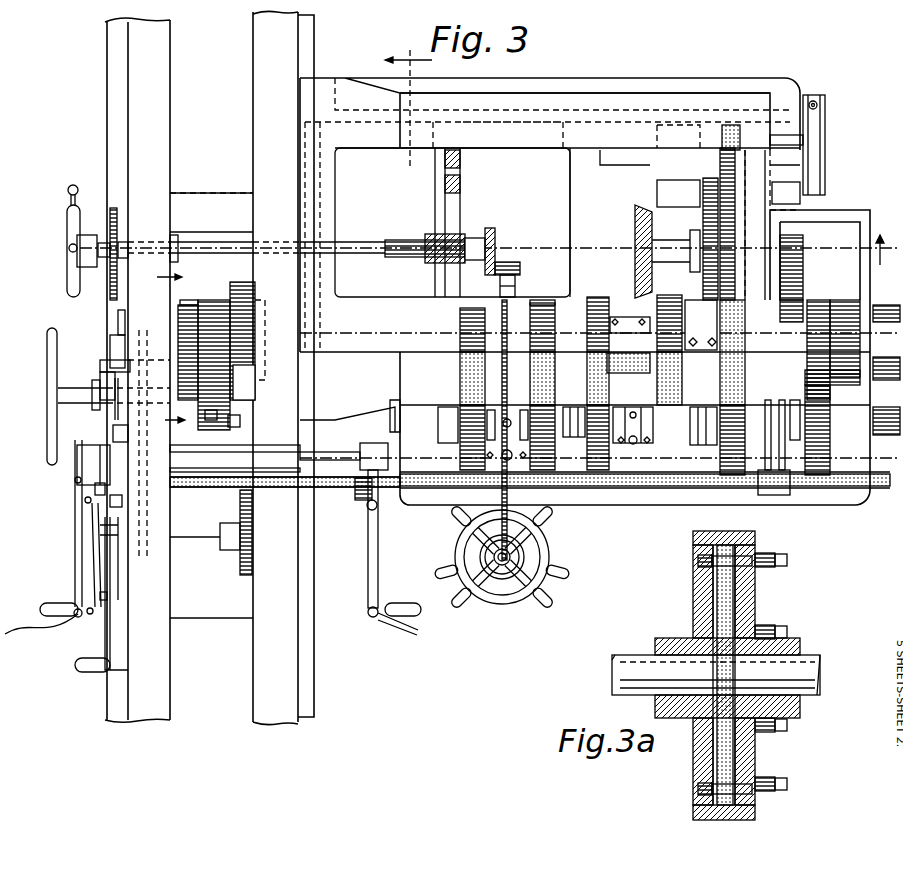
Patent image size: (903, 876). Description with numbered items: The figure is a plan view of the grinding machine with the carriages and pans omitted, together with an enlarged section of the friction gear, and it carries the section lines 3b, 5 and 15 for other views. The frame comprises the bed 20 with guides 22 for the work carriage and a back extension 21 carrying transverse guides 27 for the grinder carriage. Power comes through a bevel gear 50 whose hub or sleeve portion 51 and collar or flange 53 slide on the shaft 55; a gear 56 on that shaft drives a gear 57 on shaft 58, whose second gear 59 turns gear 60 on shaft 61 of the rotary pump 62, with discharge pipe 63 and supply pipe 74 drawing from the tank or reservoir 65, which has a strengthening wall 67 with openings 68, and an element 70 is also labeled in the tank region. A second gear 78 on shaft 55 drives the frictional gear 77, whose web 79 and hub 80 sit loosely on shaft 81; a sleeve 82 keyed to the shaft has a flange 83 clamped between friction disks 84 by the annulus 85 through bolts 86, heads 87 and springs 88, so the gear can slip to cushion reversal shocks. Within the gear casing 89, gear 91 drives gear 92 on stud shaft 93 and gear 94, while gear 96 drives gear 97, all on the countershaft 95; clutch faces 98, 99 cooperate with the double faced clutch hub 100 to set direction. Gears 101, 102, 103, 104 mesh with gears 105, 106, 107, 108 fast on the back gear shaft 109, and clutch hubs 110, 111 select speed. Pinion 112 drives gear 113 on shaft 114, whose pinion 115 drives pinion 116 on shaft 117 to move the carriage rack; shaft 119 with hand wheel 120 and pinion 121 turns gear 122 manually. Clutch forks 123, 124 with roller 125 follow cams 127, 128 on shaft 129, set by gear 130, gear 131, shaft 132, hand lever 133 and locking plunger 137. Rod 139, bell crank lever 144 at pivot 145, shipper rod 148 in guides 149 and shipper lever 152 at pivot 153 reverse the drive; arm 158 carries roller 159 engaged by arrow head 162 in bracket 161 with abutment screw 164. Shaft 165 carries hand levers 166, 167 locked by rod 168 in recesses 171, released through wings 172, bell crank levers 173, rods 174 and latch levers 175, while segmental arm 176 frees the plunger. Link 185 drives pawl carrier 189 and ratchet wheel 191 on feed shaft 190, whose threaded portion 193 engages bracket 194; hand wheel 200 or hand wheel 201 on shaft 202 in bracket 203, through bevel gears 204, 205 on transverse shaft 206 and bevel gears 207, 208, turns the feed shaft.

In FIG. 3, the section line 3b is at (408, 101).
In FIG. 3, the section line 5 is at (888, 250).
In FIG. 3, the section line 15 is at (179, 351).
In FIG. 3, the bed 20 is at (212, 619).
In FIG. 3, the back extension 21 is at (652, 85).
In FIG. 3, the guides 22 is at (260, 713).
In FIG. 3, the guides 27 is at (570, 95).
In FIG. 3, the bevel gear 50 is at (638, 212).
In FIG. 3, the hub or sleeve portion 51 is at (670, 248).
In FIG. 3, the collar or flange 53 is at (703, 266).
In FIG. 3, the shaft 55 is at (830, 250).
In FIG. 3, the gear 56 is at (658, 258).
In FIG. 3, the gear 57 is at (700, 185).
In FIG. 3, the shaft 58 is at (800, 205).
In FIG. 3, the second gear 59 is at (730, 220).
In FIG. 3, the gear 60 is at (727, 140).
In FIG. 3, the shaft 61 is at (780, 135).
In FIG. 3, the rotary pump 62 is at (812, 130).
In FIG. 3, the discharge pipe 63 is at (815, 100).
In FIG. 3, the tank or reservoir 65 is at (452, 222).
In FIG. 3, the wall 67 is at (452, 212).
In FIG. 3, the openings 68 is at (465, 165).
In FIG. 3, the shaft 70 is at (440, 195).
In FIG. 3, the inlet or supply pipe 74 is at (800, 165).
In FIG. 3, the gear 77 is at (795, 285).
In FIG. 3A, the gear 77 is at (763, 675).
In FIG. 3, the second gear 78 is at (805, 240).
In FIG. 3A, the web 79 is at (755, 592).
In FIG. 3A, the hub or sleeve portion 80 is at (800, 641).
In FIG. 3, the shaft 81 is at (868, 318).
In FIG. 3A, the shaft 81 is at (805, 672).
In FIG. 3A, the sleeve 82 is at (668, 640).
In FIG. 3A, the annular flange 83 is at (717, 593).
In FIG. 3A, the washers or disks 84 is at (745, 605).
In FIG. 3A, the friction ring or annulus 85 is at (700, 575).
In FIG. 3A, the bolts 86 is at (700, 560).
In FIG. 3A, the heads 87 is at (790, 563).
In FIG. 3A, the springs 88 is at (772, 555).
In FIG. 3, the gear box or casing 89 is at (852, 510).
In FIG. 3, the gear 91 is at (865, 336).
In FIG. 3, the gear 92 is at (840, 385).
In FIG. 3, the stud shaft 93 is at (886, 377).
In FIG. 3, the gear 94 is at (830, 455).
In FIG. 3, the transmission countershaft 95 is at (370, 396).
In FIG. 3, the second gear 96 is at (789, 342).
In FIG. 3, the gear 97 is at (722, 458).
In FIG. 3, the clutch face 98 is at (795, 440).
In FIG. 3, the clutch face 99 is at (766, 460).
In FIG. 3, the double faced clutch hub 100 is at (782, 470).
In FIG. 3, the gear 101 is at (668, 445).
In FIG. 3, the gear 102 is at (630, 455).
In FIG. 3, the gear 103 is at (522, 462).
In FIG. 3, the gear 104 is at (462, 462).
In FIG. 3, the gear 105 is at (640, 318).
In FIG. 3, the gear 106 is at (600, 297).
In FIG. 3, the gear 107 is at (545, 300).
In FIG. 3, the gear 108 is at (466, 322).
In FIG. 3, the back gear shaft 109 is at (556, 340).
In FIG. 3, the double faced clutch hub 110 is at (621, 408).
In FIG. 3, the double faced clutch hub 111 is at (514, 410).
In FIG. 3, the pinion 112 is at (259, 355).
In FIG. 3, the gear 113 is at (250, 302).
In FIG. 3, the shaft 114 is at (186, 305).
In FIG. 3, the pinion 115 is at (238, 290).
In FIG. 3, the gear or pinion 116 is at (236, 427).
In FIG. 3, the shaft 117 is at (249, 396).
In FIG. 3, the shaft 119 is at (80, 385).
In FIG. 3, the hand wheel 120 is at (48, 462).
In FIG. 3, the pinion 121 is at (211, 420).
In FIG. 3, the gear 122 is at (210, 306).
In FIG. 3, the clutch fork 123 is at (638, 465).
In FIG. 3, the clutch fork 124 is at (514, 470).
In FIG. 3, the roller 125 is at (600, 462).
In FIG. 3, the cam 127 is at (634, 458).
In FIG. 3, the cam 128 is at (512, 452).
In FIG. 3, the shaft 129 is at (335, 478).
In FIG. 3, the gear 130 is at (240, 500).
In FIG. 3, the gear 131 is at (242, 565).
In FIG. 3, the shaft 132 is at (190, 540).
In FIG. 3, the hand lever or crank 133 is at (110, 638).
In FIG. 3, the locking plunger or bolt 137 is at (100, 590).
In FIG. 3, the rod 139 is at (716, 486).
In FIG. 3, the bell crank lever 144 is at (172, 470).
In FIG. 3, the pivot 145 is at (196, 452).
In FIG. 3, the shipper rod 148 is at (118, 325).
In FIG. 3, the guides 149 is at (118, 350).
In FIG. 3, the shipper lever 152 is at (108, 392).
In FIG. 3, the pivot 153 is at (95, 398).
In FIG. 3, the arm 158 is at (775, 495).
In FIG. 3, the roller 159 is at (113, 430).
In FIG. 3, the bracket 161 is at (122, 505).
In FIG. 3, the arrow head 162 is at (98, 455).
In FIG. 3, the abutment screw 164 is at (122, 532).
In FIG. 3, the shaft 165 is at (336, 452).
In FIG. 3, the hand lever 166 is at (78, 545).
In FIG. 3, the hand lever 167 is at (380, 580).
In FIG. 3, the locking rod or bolt 168 is at (185, 490).
In FIG. 3, the apertures or recesses 171 is at (78, 482).
In FIG. 3, the wings or segmental flanges 172 is at (358, 480).
In FIG. 3, the bell crank levers 173 is at (375, 508).
In FIG. 3, the rods 174 is at (369, 608).
In FIG. 3, the latch levers 175 is at (405, 636).
In FIG. 3, the segmental arm 176 is at (100, 462).
In FIG. 3, the link 185 is at (108, 300).
In FIG. 3, the yoke or pawl carrier 189 is at (126, 245).
In FIG. 3, the shaft 190 is at (211, 247).
In FIG. 3, the ratchet wheel 191 is at (112, 210).
In FIG. 3, the threaded portion 193 is at (410, 240).
In FIG. 3, the bracket 194 is at (425, 262).
In FIG. 3, the hand wheel 200 is at (67, 228).
In FIG. 3, the hand wheel 201 is at (500, 590).
In FIG. 3, the shaft 202 is at (525, 602).
In FIG. 3, the bracket 203 is at (470, 525).
In FIG. 3, the bevel gear 204 is at (480, 606).
In FIG. 3, the bevel gear 205 is at (482, 560).
In FIG. 3, the transverse shaft 206 is at (488, 300).
In FIG. 3, the second bevel gear 207 is at (507, 263).
In FIG. 3, the bevel gear 208 is at (492, 232).